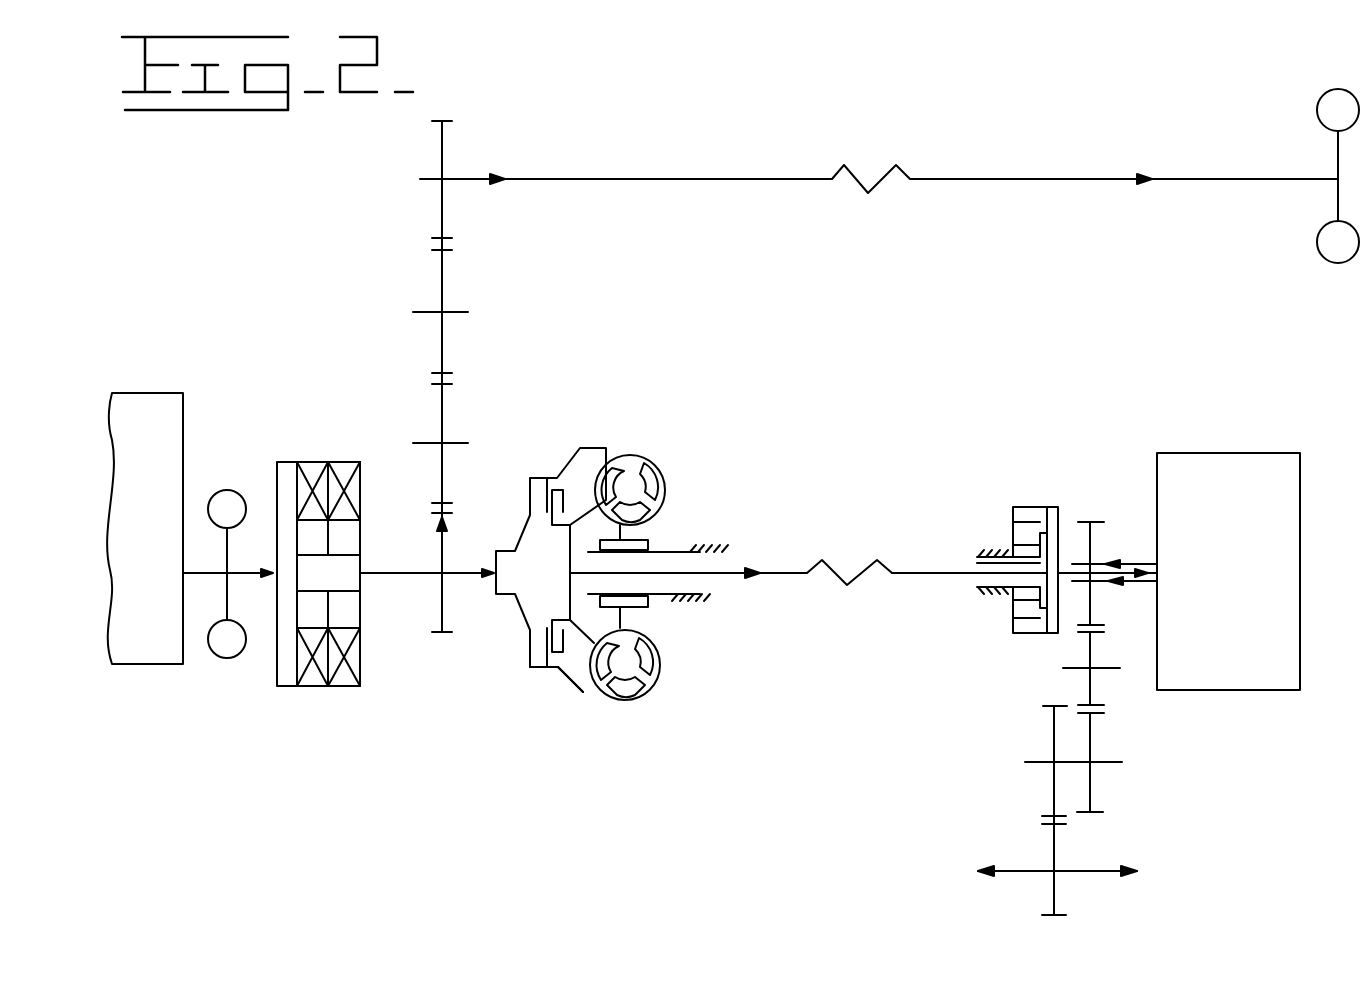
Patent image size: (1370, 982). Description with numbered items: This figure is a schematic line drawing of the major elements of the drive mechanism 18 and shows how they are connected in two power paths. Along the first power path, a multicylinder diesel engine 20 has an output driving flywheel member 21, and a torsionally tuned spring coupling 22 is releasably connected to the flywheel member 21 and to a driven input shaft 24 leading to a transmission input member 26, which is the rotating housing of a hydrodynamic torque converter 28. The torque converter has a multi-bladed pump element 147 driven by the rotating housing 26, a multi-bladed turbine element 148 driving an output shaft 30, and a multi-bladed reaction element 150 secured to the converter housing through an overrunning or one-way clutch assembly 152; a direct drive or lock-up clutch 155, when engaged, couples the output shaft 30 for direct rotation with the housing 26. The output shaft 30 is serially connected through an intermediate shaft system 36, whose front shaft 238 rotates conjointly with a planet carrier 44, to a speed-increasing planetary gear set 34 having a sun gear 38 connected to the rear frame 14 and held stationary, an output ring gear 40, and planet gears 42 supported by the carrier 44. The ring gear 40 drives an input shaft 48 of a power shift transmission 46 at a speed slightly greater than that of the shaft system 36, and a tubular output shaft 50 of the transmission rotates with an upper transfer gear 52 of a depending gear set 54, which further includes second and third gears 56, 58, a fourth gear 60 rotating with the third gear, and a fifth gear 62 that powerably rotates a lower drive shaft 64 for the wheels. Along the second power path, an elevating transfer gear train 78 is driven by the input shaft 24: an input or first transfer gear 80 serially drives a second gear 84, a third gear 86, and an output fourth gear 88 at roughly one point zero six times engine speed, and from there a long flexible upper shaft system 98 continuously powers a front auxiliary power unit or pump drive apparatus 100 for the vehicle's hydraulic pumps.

The rear frame 14 is at (1000, 548).
The drive mechanism 18 is at (428, 584).
The multicylinder diesel engine 20 is at (163, 532).
The driving flywheel member 21 is at (224, 650).
The torsionally tuned spring coupling 22 is at (328, 447).
The input shaft 24 is at (408, 573).
The transmission input member 26 is at (598, 450).
The hydrodynamic torque converter 28 is at (672, 459).
The output shaft 30 is at (780, 572).
The speed-increasing planetary gear set 34 is at (1030, 494).
The intermediate shaft system 36 is at (907, 558).
The sun gear 38 is at (1013, 596).
The output ring gear 40 is at (1025, 630).
The planet gears 42 is at (1013, 535).
The planet carrier 44 is at (1045, 533).
The power shift transmission 46 is at (1240, 559).
The input shaft 48 is at (1130, 580).
The tubular output shaft 50 is at (1098, 562).
The upper transfer gear 52 is at (1085, 522).
The depending gear set 54 is at (1040, 733).
The second gear 56 is at (1087, 645).
The third gear 58 is at (1092, 737).
The fourth gear 60 is at (1053, 797).
The fifth gear 62 is at (1052, 835).
The lower drive shaft 64 is at (1090, 871).
The elevating transfer gear train 78 is at (456, 334).
The first transfer gear 80 is at (440, 625).
The second gear 84 is at (442, 400).
The third gear 86 is at (442, 268).
The fourth gear 88 is at (442, 144).
The upper shaft system 98 is at (763, 165).
The front auxiliary power unit 100 is at (1318, 103).
The pump element 147 is at (656, 670).
The turbine element 148 is at (592, 673).
The reaction element 150 is at (630, 530).
The one-way clutch assembly 152 is at (647, 600).
The lock-up clutch 155 is at (540, 678).
The front shaft 238 is at (980, 578).